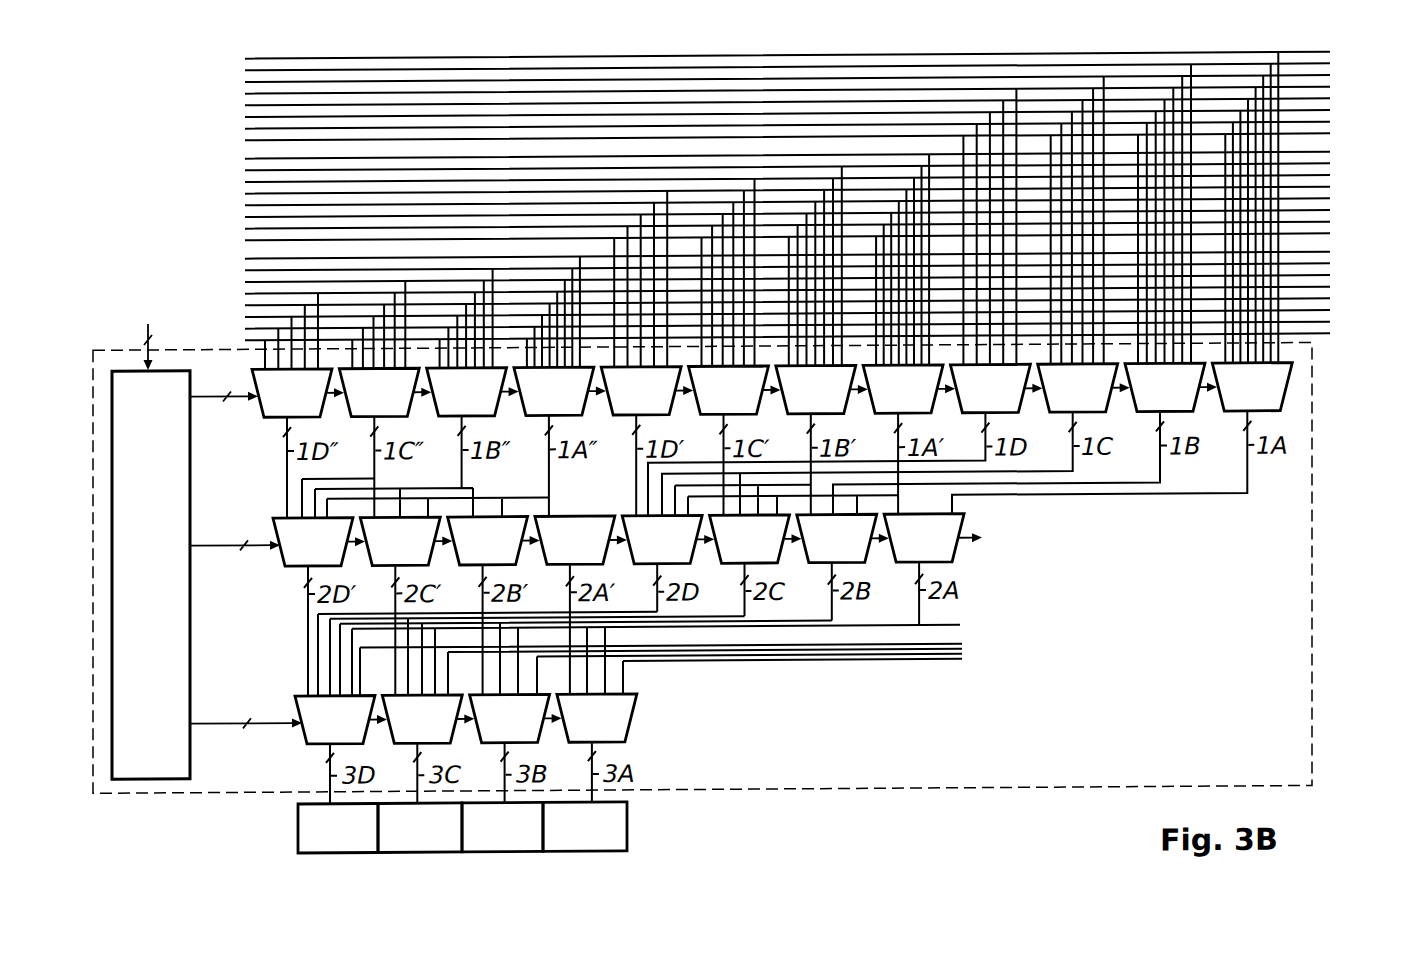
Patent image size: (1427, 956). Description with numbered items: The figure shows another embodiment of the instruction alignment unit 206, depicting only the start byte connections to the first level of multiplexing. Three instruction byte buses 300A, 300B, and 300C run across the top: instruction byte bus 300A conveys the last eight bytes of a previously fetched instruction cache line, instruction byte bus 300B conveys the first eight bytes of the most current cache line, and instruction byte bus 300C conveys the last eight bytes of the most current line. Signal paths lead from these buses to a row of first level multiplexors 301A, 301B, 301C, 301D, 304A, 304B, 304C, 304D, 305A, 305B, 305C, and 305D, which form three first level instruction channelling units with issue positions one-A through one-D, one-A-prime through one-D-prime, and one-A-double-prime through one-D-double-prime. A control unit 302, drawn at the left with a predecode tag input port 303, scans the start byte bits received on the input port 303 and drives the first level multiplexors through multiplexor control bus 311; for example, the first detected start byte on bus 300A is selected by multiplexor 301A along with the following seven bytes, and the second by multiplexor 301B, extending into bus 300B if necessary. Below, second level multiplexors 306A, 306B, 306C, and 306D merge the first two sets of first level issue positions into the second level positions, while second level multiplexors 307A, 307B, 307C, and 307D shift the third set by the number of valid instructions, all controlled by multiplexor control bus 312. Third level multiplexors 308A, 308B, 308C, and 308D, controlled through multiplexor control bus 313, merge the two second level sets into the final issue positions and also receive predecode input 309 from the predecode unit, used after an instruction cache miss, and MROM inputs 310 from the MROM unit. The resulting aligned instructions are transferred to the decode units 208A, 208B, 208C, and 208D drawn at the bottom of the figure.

The instruction byte bus 300A is at (1338, 60).
The instruction byte bus 300B is at (1338, 159).
The instruction byte bus 300C is at (1338, 257).
The first level multiplexor 301A is at (1252, 387).
The first level multiplexor 301B is at (1165, 387).
The first level multiplexor 301C is at (1078, 388).
The first level multiplexor 301D is at (990, 388).
The first level multiplexor 304A is at (903, 389).
The first level multiplexor 304B is at (816, 389).
The first level multiplexor 304C is at (729, 390).
The first level multiplexor 304D is at (641, 391).
The first level multiplexor 305A is at (554, 391).
The first level multiplexor 305B is at (467, 392).
The first level multiplexor 305C is at (379, 392).
The first level multiplexor 305D is at (292, 393).
The second level multiplexor 306A is at (924, 538).
The second level multiplexor 306B is at (837, 538).
The second level multiplexor 306C is at (750, 539).
The second level multiplexor 306D is at (662, 539).
The second level multiplexor 307A is at (575, 540).
The second level multiplexor 307B is at (488, 541).
The second level multiplexor 307C is at (400, 541).
The second level multiplexor 307D is at (313, 542).
The third level multiplexor 308A is at (597, 718).
The third level multiplexor 308B is at (510, 718).
The third level multiplexor 308C is at (422, 719).
The third level multiplexor 308D is at (335, 720).
The control unit 302 is at (173, 595).
The predecode tag input port 303 is at (152, 333).
The multiplexor control bus 311 is at (206, 397).
The multiplexor control bus 312 is at (211, 547).
The multiplexor control bus 313 is at (259, 729).
The predecode input 309 is at (953, 626).
The MROM inputs 310 is at (760, 640).
The instruction alignment unit 206 is at (921, 794).
The decode unit 208A is at (585, 827).
The decode unit 208B is at (502, 827).
The decode unit 208C is at (420, 828).
The decode unit 208D is at (338, 828).